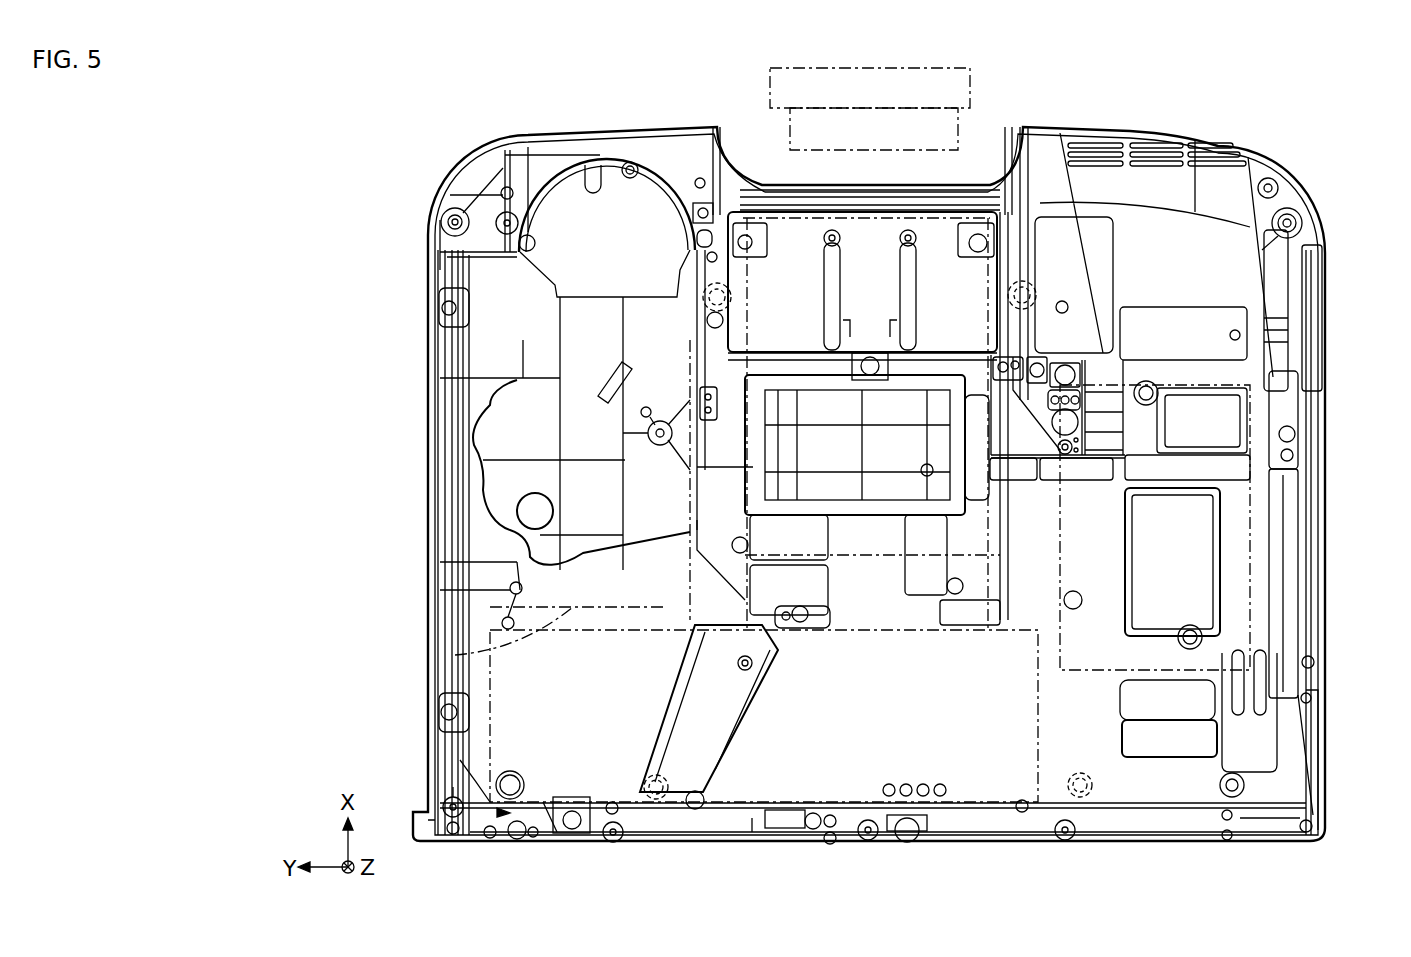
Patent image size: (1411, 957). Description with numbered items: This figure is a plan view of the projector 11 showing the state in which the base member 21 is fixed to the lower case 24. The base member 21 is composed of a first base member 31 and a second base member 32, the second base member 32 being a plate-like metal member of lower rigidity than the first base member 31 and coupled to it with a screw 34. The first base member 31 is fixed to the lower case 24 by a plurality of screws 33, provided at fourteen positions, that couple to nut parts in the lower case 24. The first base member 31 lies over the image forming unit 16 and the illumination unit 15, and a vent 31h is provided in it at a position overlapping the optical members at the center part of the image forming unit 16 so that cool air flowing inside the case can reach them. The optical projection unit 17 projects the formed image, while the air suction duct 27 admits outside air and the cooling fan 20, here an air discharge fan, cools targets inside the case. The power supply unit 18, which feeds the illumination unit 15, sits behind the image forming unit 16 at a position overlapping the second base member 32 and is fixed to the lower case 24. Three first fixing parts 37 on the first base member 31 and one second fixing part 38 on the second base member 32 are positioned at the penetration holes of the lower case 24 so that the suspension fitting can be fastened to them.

The projector 11 is at (448, 140).
The lower case 24 is at (447, 181).
The screw 33 is at (628, 163).
The first fixing part 37 is at (706, 285).
The optical projection unit 17 is at (975, 72).
The vent 31h is at (822, 400).
The first base member 31 is at (893, 600).
The illumination unit 15 is at (1250, 535).
The cooling fan 20 is at (1313, 757).
The image forming unit 16 is at (855, 560).
The air suction duct 27 is at (455, 655).
The second base member 32 is at (712, 722).
The screw 34 is at (747, 672).
The second fixing part 38 is at (655, 800).
The power supply unit 18 is at (855, 560).
The base member 21 is at (986, 645).